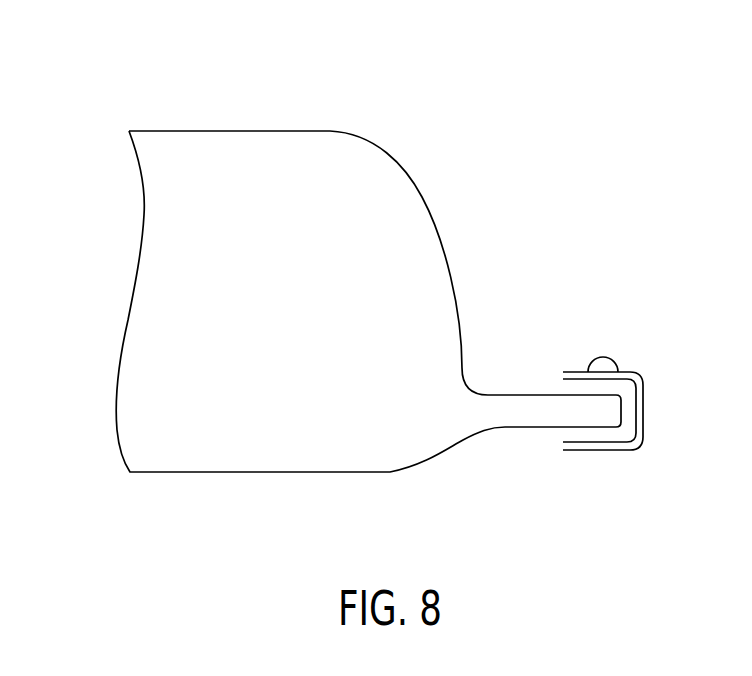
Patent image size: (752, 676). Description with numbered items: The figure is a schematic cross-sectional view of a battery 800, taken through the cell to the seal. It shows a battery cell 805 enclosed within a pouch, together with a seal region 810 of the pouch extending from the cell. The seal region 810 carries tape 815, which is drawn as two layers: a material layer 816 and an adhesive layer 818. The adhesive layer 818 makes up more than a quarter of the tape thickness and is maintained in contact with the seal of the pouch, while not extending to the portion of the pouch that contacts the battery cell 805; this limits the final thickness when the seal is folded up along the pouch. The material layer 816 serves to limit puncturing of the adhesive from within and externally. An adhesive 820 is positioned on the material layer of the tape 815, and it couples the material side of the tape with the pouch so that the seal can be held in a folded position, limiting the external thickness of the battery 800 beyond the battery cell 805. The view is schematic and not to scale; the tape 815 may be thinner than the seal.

The battery 800 is at (81, 107).
The battery cell 805 is at (390, 150).
The seal region 810 is at (527, 428).
The tape 815 is at (644, 410).
The material layer 816 is at (641, 374).
The adhesive layer 818 is at (636, 434).
The adhesive 820 is at (603, 356).